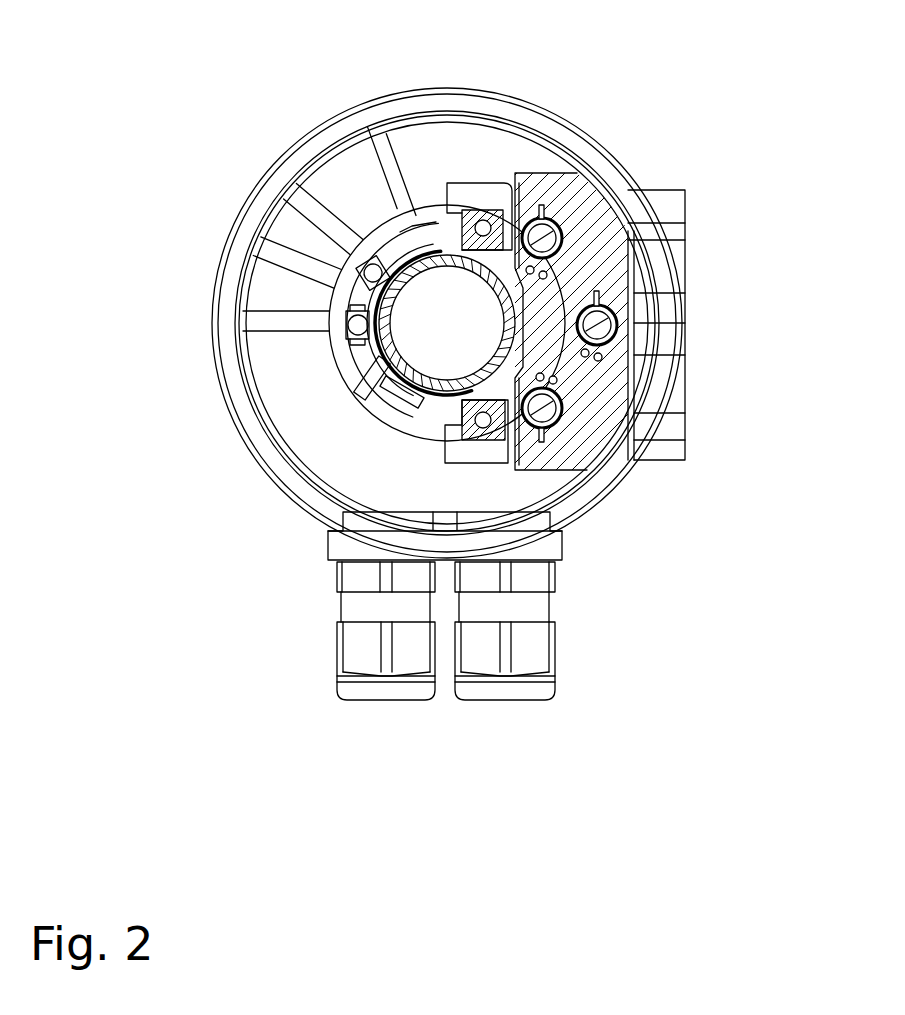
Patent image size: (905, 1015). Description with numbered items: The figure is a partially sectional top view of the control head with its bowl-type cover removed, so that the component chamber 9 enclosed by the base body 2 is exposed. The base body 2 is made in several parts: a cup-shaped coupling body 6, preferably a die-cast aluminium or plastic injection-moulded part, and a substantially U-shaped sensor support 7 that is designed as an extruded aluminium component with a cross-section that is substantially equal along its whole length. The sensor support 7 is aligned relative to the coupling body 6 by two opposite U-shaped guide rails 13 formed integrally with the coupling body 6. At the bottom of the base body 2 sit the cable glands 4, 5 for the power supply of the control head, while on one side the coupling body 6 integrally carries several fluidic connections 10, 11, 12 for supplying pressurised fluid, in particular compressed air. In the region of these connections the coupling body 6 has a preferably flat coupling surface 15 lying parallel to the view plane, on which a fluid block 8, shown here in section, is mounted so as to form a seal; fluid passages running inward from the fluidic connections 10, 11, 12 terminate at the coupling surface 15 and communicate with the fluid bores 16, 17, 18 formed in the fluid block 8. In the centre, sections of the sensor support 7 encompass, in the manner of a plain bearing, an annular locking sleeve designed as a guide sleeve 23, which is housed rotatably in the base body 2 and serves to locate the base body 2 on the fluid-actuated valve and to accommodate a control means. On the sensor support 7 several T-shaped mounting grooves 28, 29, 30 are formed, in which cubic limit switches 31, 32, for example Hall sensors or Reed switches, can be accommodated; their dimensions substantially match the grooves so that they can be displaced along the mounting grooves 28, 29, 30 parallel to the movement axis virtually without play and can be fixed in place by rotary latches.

The base body 2 is at (334, 101).
The cable gland 4 is at (528, 657).
The cable gland 5 is at (408, 655).
The coupling body 6 is at (342, 463).
The sensor support 7 is at (468, 222).
The fluid block 8 is at (523, 262).
The component chamber 9 is at (443, 152).
The fluidic connection 10 is at (687, 233).
The fluidic connection 11 is at (684, 327).
The fluidic connection 12 is at (688, 418).
The guide rail 13 is at (489, 198).
The coupling surface 15 is at (538, 203).
The fluid bore 16 is at (545, 234).
The fluid bore 17 is at (590, 322).
The fluid bore 18 is at (548, 410).
The guide sleeve 23 is at (350, 437).
The mounting groove 28 is at (357, 318).
The mounting groove 29 is at (382, 240).
The mounting groove 30 is at (400, 232).
The limit switch 31 is at (355, 326).
The limit switch 32 is at (373, 272).